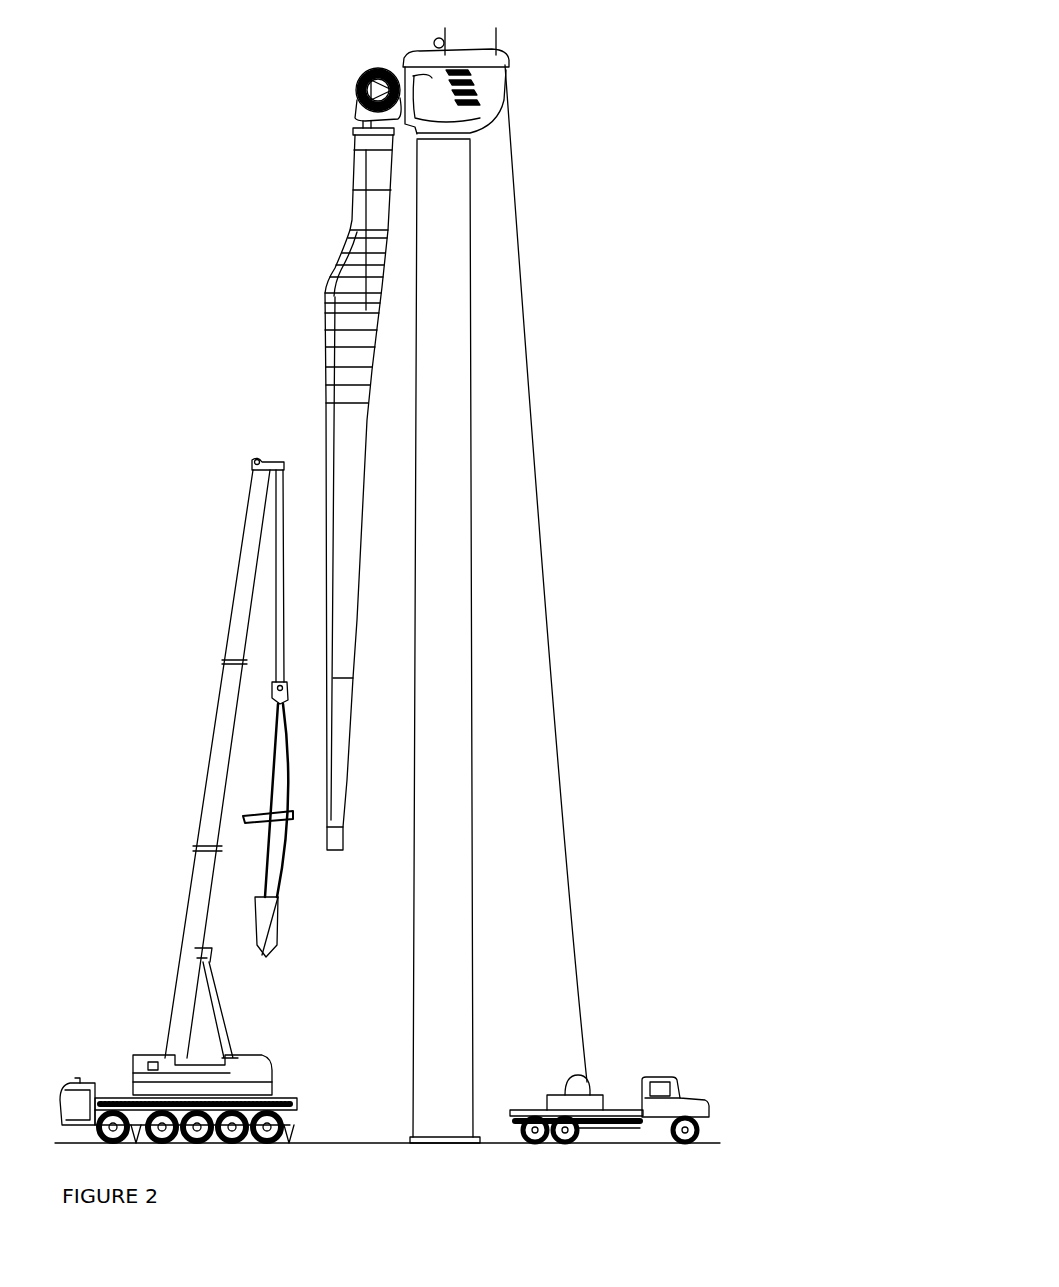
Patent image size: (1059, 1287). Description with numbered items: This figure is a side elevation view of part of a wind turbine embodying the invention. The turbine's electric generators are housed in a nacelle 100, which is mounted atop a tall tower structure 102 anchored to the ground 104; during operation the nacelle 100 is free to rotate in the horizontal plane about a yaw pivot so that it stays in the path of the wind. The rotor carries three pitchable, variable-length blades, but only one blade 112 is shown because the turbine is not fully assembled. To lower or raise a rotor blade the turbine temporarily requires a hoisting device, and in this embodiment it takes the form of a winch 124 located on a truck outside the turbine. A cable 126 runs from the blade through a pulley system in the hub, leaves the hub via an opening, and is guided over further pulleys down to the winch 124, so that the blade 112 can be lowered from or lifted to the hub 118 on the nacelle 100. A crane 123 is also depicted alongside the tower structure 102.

The nacelle 100 is at (497, 108).
The tower structure 102 is at (447, 382).
The ground 104 is at (342, 1143).
The blade 112 is at (355, 218).
The hub 118 is at (358, 80).
The crane 123 is at (245, 596).
The winch 124 is at (588, 1088).
The cable 126 is at (357, 124).